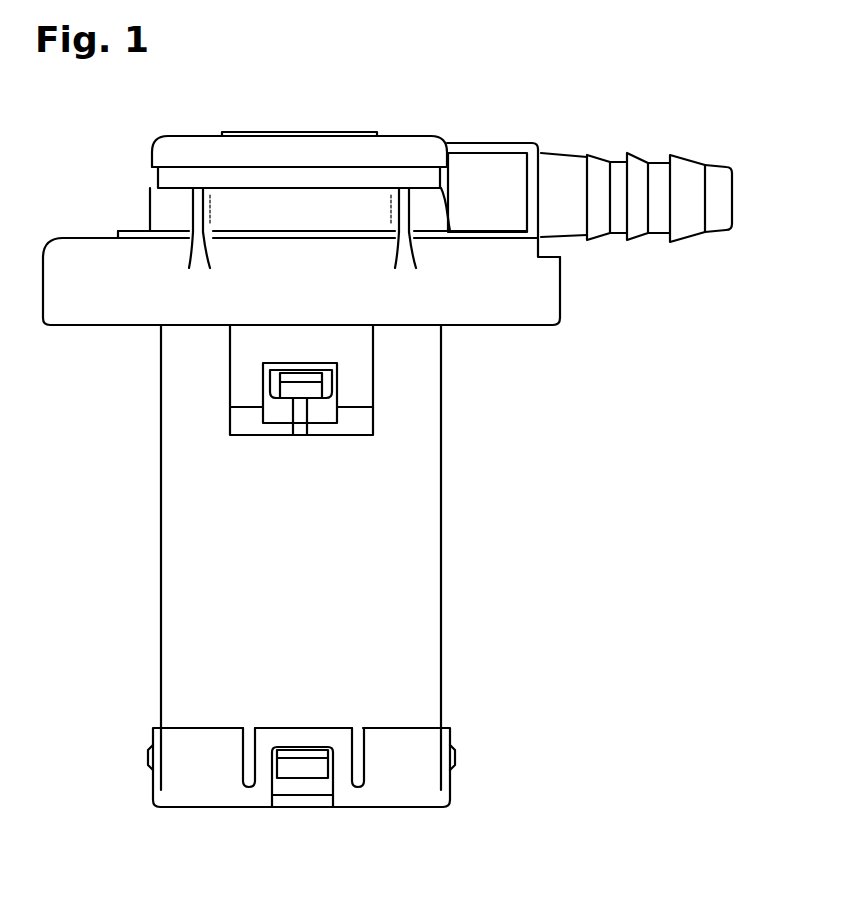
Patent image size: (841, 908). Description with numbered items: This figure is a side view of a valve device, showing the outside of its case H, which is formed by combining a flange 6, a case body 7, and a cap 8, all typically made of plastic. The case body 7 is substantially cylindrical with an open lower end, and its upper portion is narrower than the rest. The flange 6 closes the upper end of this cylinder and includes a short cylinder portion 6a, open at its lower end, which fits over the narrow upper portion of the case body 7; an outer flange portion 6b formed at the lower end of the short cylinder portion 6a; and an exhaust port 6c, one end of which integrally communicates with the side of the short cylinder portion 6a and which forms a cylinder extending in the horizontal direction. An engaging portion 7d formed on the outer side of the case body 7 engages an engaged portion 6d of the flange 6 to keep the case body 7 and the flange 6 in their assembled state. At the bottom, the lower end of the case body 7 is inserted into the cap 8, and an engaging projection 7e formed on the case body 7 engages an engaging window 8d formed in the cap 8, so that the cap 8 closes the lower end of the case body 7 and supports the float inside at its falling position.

The flange 6 is at (110, 243).
The short cylinder portion 6a is at (307, 152).
The outer flange portion 6b is at (80, 252).
The exhaust port 6c is at (618, 165).
The engaged portion 6d is at (275, 398).
The case body 7 is at (415, 473).
The engaging portion 7d is at (310, 392).
The engaging projection 7e is at (298, 755).
The cap 8 is at (412, 790).
The engaging window 8d is at (290, 788).
The case H is at (415, 567).